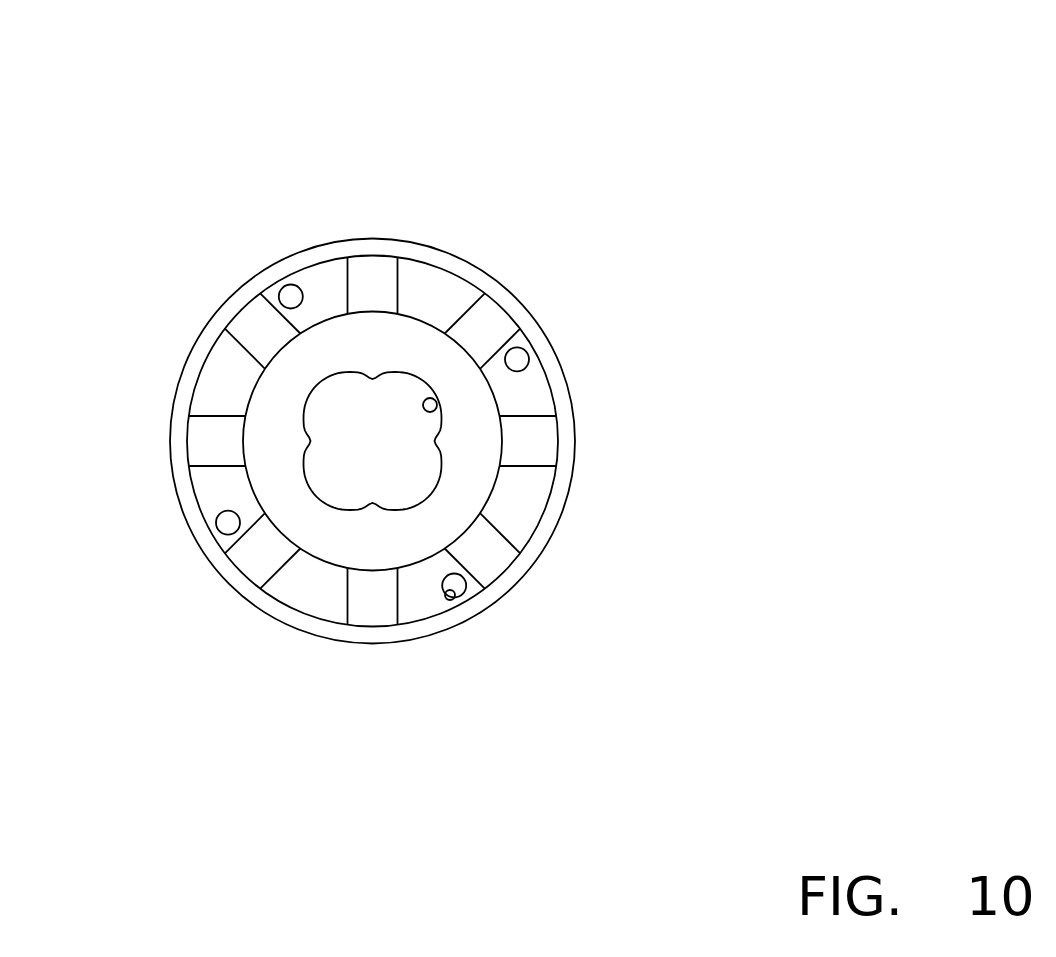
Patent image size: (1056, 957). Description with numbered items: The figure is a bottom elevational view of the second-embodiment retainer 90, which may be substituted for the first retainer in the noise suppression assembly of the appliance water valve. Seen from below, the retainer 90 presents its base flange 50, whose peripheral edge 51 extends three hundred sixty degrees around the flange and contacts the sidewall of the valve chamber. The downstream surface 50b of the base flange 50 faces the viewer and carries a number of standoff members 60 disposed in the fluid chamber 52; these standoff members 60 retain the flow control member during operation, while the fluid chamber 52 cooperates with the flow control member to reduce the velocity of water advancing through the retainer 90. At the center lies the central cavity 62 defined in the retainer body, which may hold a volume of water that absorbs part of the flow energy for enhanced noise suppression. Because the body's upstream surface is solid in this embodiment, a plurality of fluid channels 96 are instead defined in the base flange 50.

The retainer 90 is at (497, 448).
The peripheral edge 51 is at (237, 296).
The fluid chamber 52 is at (220, 377).
The base flange 50 is at (538, 482).
The downstream surface 50b is at (207, 503).
The standoff members 60 is at (491, 566).
The central cavity 62 is at (438, 413).
The fluid channels 96 is at (451, 600).